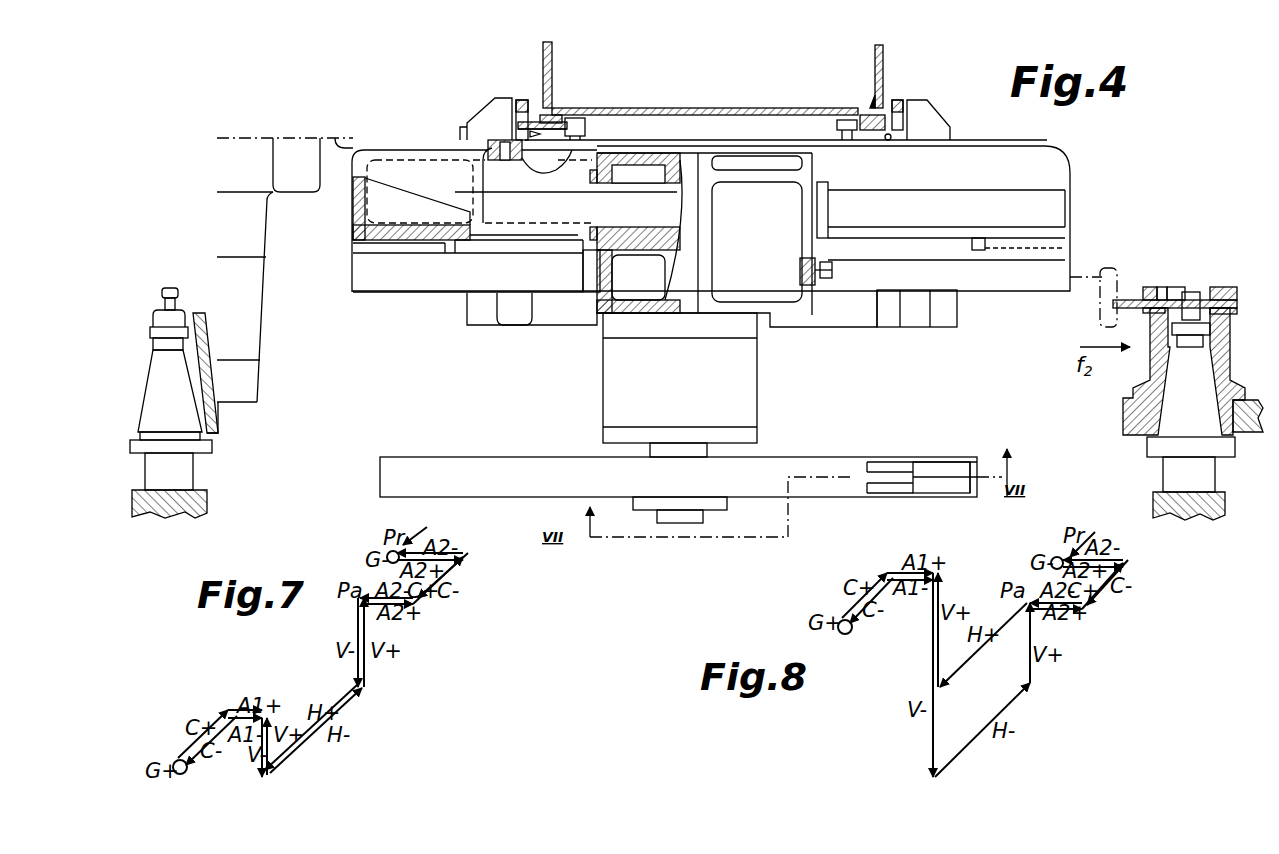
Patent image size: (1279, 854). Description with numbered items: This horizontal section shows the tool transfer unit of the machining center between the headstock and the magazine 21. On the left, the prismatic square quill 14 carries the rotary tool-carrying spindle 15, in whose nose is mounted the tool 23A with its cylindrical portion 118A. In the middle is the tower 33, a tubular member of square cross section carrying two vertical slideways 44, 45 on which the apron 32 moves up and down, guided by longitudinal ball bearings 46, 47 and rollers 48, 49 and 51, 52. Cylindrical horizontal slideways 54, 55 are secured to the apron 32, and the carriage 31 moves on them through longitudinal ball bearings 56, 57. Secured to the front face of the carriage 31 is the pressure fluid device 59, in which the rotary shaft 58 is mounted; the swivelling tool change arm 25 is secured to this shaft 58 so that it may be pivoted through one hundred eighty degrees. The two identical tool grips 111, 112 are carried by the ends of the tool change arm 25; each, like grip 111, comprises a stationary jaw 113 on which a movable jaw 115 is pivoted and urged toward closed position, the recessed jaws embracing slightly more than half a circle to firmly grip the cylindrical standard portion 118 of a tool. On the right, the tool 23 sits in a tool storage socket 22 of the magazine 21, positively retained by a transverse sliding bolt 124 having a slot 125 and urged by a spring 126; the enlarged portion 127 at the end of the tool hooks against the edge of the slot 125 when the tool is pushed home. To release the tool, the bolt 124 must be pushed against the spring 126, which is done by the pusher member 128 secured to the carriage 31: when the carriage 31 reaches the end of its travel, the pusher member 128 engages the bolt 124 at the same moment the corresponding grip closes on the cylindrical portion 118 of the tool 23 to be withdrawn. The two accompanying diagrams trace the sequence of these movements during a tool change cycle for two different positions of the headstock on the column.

The quill 14 is at (283, 235).
The tool-carrying spindle 15 is at (215, 421).
The cylindrical portion 118A is at (190, 470).
The tool 23A is at (200, 500).
The longitudinal ball bearing 46 is at (513, 132).
The roller 48 is at (515, 97).
The vertical slideway 44 is at (540, 102).
The roller 49 is at (587, 127).
The longitudinal ball bearing 57 is at (617, 163).
The roller 52 is at (827, 120).
The tower 33 is at (882, 73).
The vertical slideway 45 is at (897, 100).
The roller 51 is at (907, 102).
The longitudinal ball bearing 47 is at (900, 137).
The apron 32 is at (1052, 170).
The cylindrical horizontal slideway 55 is at (1050, 210).
The cylindrical horizontal slideway 54 is at (383, 290).
The longitudinal ball bearing 56 is at (590, 298).
The pressure fluid device 59 is at (601, 398).
The carriage 31 is at (800, 313).
The pusher member 128 is at (888, 320).
The tool grip 112 is at (400, 467).
The rotary shaft 58 is at (703, 453).
The tool change arm 25 is at (843, 455).
The movable jaw 115 is at (933, 477).
The tool grip 111 is at (958, 455).
The stationary jaw 113 is at (967, 465).
The sliding bolt 124 is at (1135, 298).
The slot 125 is at (1180, 298).
The enlarged portion 127 is at (1197, 298).
The spring 126 is at (1225, 298).
The tool storage socket 22 is at (1223, 360).
The cylindrical portion 118 is at (1172, 465).
The tool 23 is at (1152, 495).
The magazine 21 is at (1253, 442).